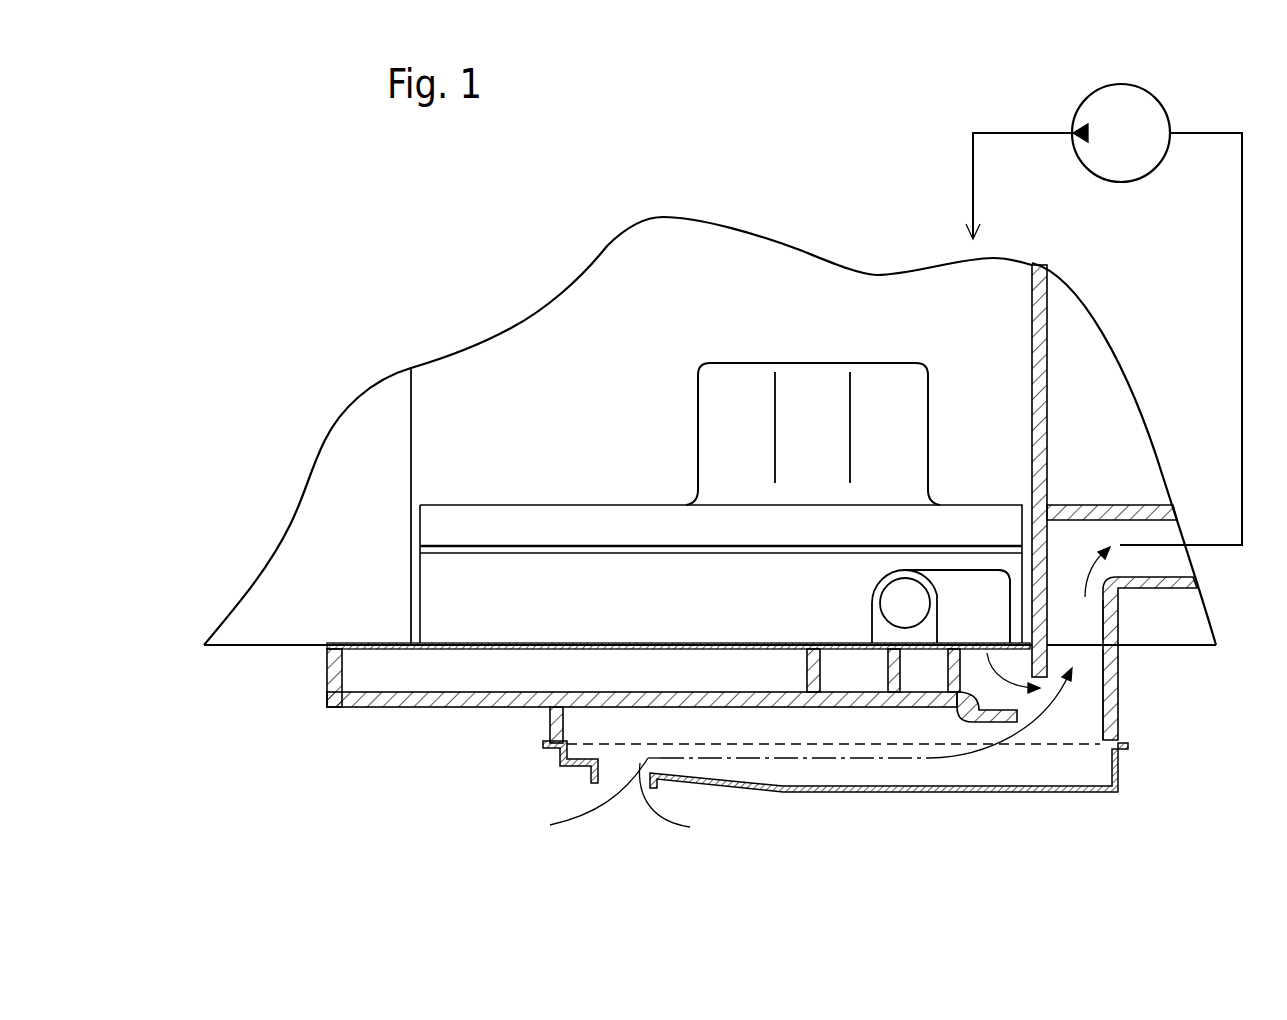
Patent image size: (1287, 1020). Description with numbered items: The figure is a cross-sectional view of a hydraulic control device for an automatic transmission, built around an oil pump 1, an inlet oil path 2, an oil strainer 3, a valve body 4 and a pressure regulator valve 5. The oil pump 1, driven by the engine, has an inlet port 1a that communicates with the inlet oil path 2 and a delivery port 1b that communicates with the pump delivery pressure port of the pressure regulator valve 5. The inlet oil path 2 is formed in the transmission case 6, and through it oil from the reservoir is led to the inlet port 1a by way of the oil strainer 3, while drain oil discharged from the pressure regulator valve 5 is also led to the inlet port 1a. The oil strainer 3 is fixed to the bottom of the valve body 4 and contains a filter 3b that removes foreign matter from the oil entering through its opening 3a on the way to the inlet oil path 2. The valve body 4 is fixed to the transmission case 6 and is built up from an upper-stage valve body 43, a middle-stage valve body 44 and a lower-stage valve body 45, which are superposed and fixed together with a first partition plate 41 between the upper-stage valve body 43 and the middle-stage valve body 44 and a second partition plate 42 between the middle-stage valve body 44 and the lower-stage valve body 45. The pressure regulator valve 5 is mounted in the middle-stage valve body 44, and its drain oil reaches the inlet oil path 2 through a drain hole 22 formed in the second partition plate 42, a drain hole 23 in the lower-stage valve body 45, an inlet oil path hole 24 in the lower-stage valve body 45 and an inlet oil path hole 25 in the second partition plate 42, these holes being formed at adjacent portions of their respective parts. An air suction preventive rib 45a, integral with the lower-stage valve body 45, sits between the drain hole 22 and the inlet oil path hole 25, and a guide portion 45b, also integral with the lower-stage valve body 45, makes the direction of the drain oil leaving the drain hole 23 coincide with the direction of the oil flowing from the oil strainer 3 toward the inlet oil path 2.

The oil pump 1 is at (1150, 92).
The inlet port 1a is at (1173, 130).
The delivery port 1b is at (1072, 130).
The inlet oil path 2 is at (1090, 623).
The oil strainer 3 is at (877, 797).
The opening 3a is at (625, 782).
The filter 3b is at (1037, 745).
The valve body 4 is at (632, 502).
The pressure regulator valve 5 is at (913, 593).
The transmission case 6 is at (1085, 330).
The drain hole 22 is at (987, 642).
The drain hole 23 is at (972, 675).
The inlet oil path hole 24 is at (1082, 693).
The inlet oil path hole 25 is at (1087, 652).
The first partition plate 41 is at (488, 544).
The second partition plate 42 is at (445, 650).
The upper-stage valve body 43 is at (425, 523).
The middle-stage valve body 44 is at (433, 601).
The lower-stage valve body 45 is at (492, 708).
The air suction preventive rib 45a is at (1047, 667).
The guide portion 45b is at (967, 725).